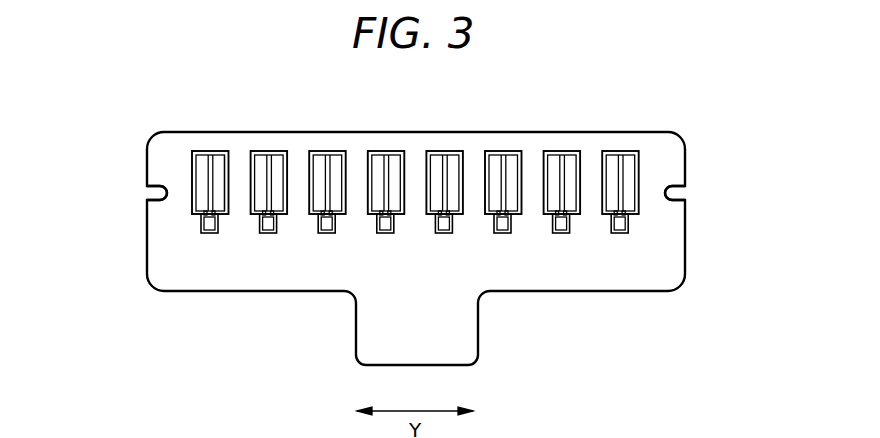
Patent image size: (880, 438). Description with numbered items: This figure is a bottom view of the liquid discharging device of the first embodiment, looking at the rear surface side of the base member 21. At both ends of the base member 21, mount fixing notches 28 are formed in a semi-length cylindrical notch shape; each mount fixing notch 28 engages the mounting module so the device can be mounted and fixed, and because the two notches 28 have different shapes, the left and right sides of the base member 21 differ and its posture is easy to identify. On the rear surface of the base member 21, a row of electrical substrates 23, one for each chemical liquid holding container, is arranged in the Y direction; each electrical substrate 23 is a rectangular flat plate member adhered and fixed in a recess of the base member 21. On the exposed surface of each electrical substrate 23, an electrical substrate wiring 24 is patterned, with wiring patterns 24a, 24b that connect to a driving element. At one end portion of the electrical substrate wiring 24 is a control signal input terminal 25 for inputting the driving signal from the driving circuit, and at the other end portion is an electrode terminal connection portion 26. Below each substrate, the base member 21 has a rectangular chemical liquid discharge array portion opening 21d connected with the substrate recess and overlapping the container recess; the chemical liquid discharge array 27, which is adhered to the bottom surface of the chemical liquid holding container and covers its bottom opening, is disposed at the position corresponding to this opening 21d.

The base member 21 is at (583, 278).
The chemical liquid discharge array portion opening 21d is at (208, 233).
The electrical substrate 23 is at (619, 153).
The electrical substrate wiring 24 is at (175, 185).
The wiring pattern 24a is at (219, 152).
The wiring pattern 24b is at (207, 152).
The control signal input terminal 25 is at (192, 165).
The electrode terminal connection portion 26 is at (203, 200).
The chemical liquid discharge array 27 is at (268, 233).
The mount fixing notch 28 is at (157, 193).